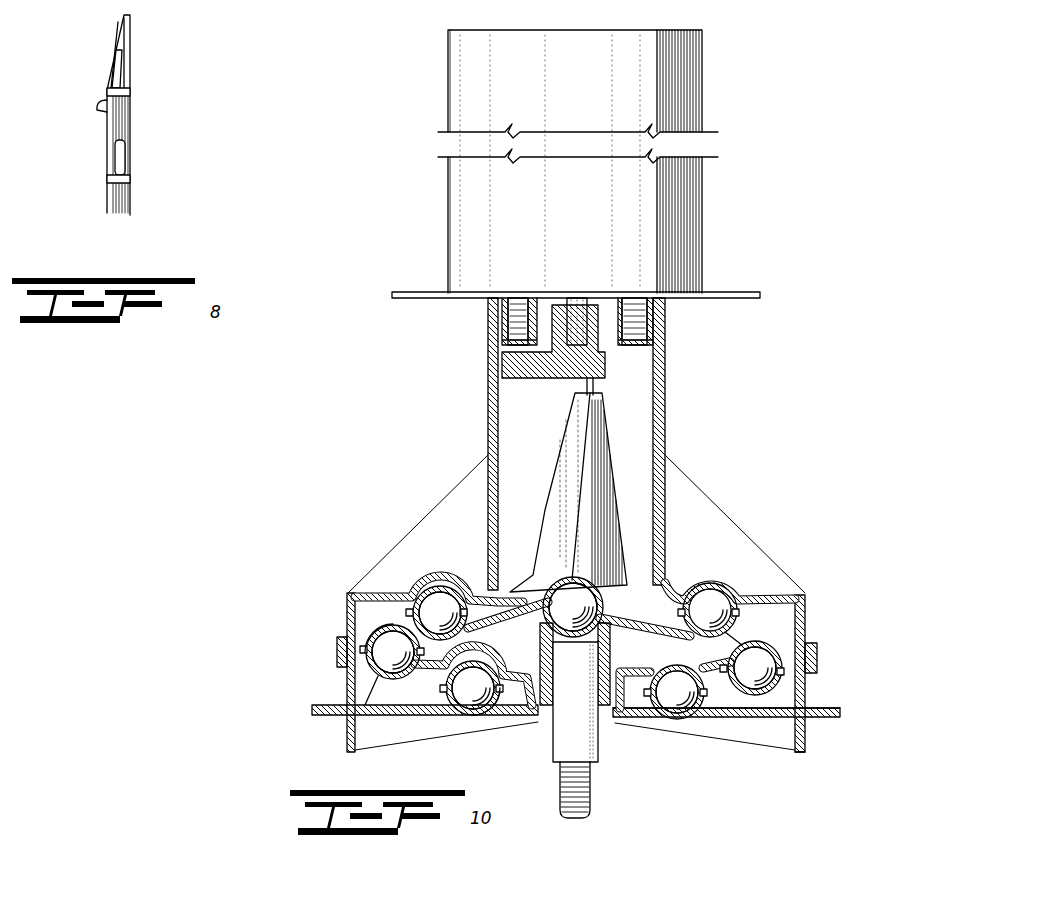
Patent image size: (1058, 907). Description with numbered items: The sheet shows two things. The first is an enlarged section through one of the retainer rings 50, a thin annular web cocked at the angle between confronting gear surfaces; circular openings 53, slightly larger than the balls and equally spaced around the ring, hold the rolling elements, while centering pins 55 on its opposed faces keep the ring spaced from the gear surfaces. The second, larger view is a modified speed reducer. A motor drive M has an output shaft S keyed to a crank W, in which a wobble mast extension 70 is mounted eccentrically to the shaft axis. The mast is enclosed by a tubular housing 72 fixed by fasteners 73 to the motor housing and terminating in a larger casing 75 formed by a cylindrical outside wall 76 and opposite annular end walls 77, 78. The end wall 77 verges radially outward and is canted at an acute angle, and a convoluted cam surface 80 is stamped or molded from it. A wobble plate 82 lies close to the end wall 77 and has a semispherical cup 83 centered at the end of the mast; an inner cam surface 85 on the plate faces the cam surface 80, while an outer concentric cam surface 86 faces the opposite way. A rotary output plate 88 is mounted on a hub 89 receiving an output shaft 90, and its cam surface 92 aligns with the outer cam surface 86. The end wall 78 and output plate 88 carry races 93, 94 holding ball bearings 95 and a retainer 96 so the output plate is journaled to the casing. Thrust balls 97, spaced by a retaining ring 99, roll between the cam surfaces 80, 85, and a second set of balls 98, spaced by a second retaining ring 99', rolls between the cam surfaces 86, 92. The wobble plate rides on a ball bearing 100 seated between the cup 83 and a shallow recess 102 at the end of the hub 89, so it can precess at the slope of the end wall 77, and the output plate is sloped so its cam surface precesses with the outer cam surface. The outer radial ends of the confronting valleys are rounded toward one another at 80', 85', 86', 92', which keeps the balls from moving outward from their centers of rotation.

In FIG. 8, the retainer ring 50 is at (130, 118).
In FIG. 8, the circular openings 53 is at (128, 72).
In FIG. 8, the centering pins 55 is at (103, 106).
In FIG. 10, the motor drive M is at (587, 81).
In FIG. 10, the output shaft S is at (574, 298).
In FIG. 10, the crank W is at (505, 358).
In FIG. 10, the wobble mast extension 70 is at (595, 422).
In FIG. 10, the tubular housing 72 is at (665, 458).
In FIG. 10, the fasteners 73 is at (508, 325).
In FIG. 10, the casing 75 is at (818, 605).
In FIG. 10, the outside wall 76 is at (810, 682).
In FIG. 10, the end wall 77 is at (745, 600).
In FIG. 10, the end wall 78 is at (795, 718).
In FIG. 10, the cam surface 80 is at (441, 593).
In FIG. 10, the rounded outer radial ends 80' is at (404, 590).
In FIG. 10, the wobble plate 82 is at (632, 612).
In FIG. 10, the semispherical cup 83 is at (562, 580).
In FIG. 10, the inner cam surface 85 is at (582, 631).
In FIG. 10, the rounded outer radial ends 85' is at (779, 605).
In FIG. 10, the outer cam surface 86 is at (569, 647).
In FIG. 10, the rounded outer radial ends 86' is at (804, 662).
In FIG. 10, the rotary output plate 88 is at (640, 700).
In FIG. 10, the hub 89 is at (603, 700).
In FIG. 10, the output shaft 90 is at (557, 755).
In FIG. 10, the cam surface 92 is at (555, 729).
In FIG. 10, the rounded outer radial ends 92' is at (743, 696).
In FIG. 10, the race 93 is at (478, 708).
In FIG. 10, the race 94 is at (470, 665).
In FIG. 10, the ball bearings 95 is at (470, 705).
In FIG. 10, the retainer 96 is at (452, 688).
In FIG. 10, the balls 97 is at (432, 590).
In FIG. 10, the balls 98 is at (392, 652).
In FIG. 10, the retaining ring 99 is at (365, 622).
In FIG. 10, the second retaining ring 99' is at (336, 638).
In FIG. 10, the ball bearing 100 is at (590, 597).
In FIG. 10, the shallow recess 102 is at (565, 583).